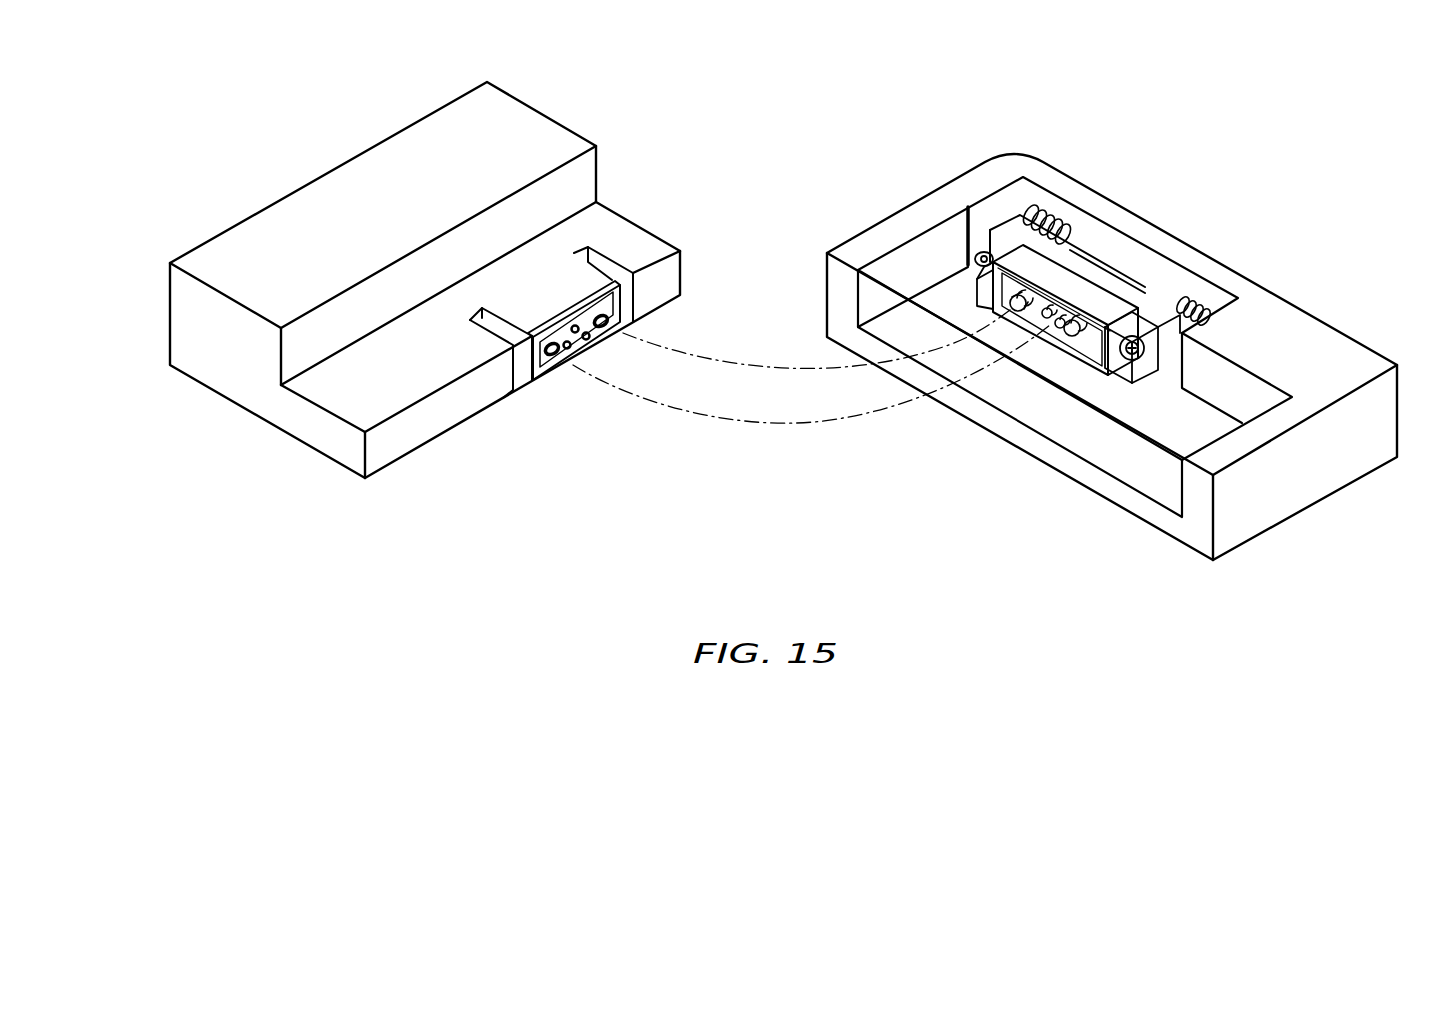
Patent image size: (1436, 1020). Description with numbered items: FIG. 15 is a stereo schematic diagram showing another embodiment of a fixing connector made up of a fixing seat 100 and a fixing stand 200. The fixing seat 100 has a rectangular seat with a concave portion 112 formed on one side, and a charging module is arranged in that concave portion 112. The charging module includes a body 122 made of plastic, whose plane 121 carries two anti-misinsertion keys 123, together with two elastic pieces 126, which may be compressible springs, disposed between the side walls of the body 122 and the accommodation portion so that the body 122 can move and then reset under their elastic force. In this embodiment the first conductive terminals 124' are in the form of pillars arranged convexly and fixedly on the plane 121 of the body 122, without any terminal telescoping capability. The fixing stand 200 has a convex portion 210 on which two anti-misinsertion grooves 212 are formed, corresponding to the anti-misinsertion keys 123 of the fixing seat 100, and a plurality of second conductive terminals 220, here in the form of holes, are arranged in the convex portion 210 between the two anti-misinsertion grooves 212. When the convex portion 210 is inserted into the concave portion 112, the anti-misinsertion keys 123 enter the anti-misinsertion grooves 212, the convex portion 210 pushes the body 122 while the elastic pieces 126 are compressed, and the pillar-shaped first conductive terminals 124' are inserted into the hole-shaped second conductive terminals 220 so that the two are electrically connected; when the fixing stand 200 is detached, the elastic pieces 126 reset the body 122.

The fixing seat 100 is at (1112, 357).
The concave portion 112 is at (1163, 468).
The plane 121 is at (1010, 283).
The body 122 is at (1031, 336).
The anti-misinsertion keys 123 is at (1090, 350).
The first conductive terminals 124' is at (988, 408).
The elastic pieces 126 is at (1190, 297).
The fixing stand 200 is at (456, 279).
The convex portion 210 is at (463, 405).
The anti-misinsertion grooves 212 is at (605, 270).
The second conductive terminals 220 is at (618, 319).